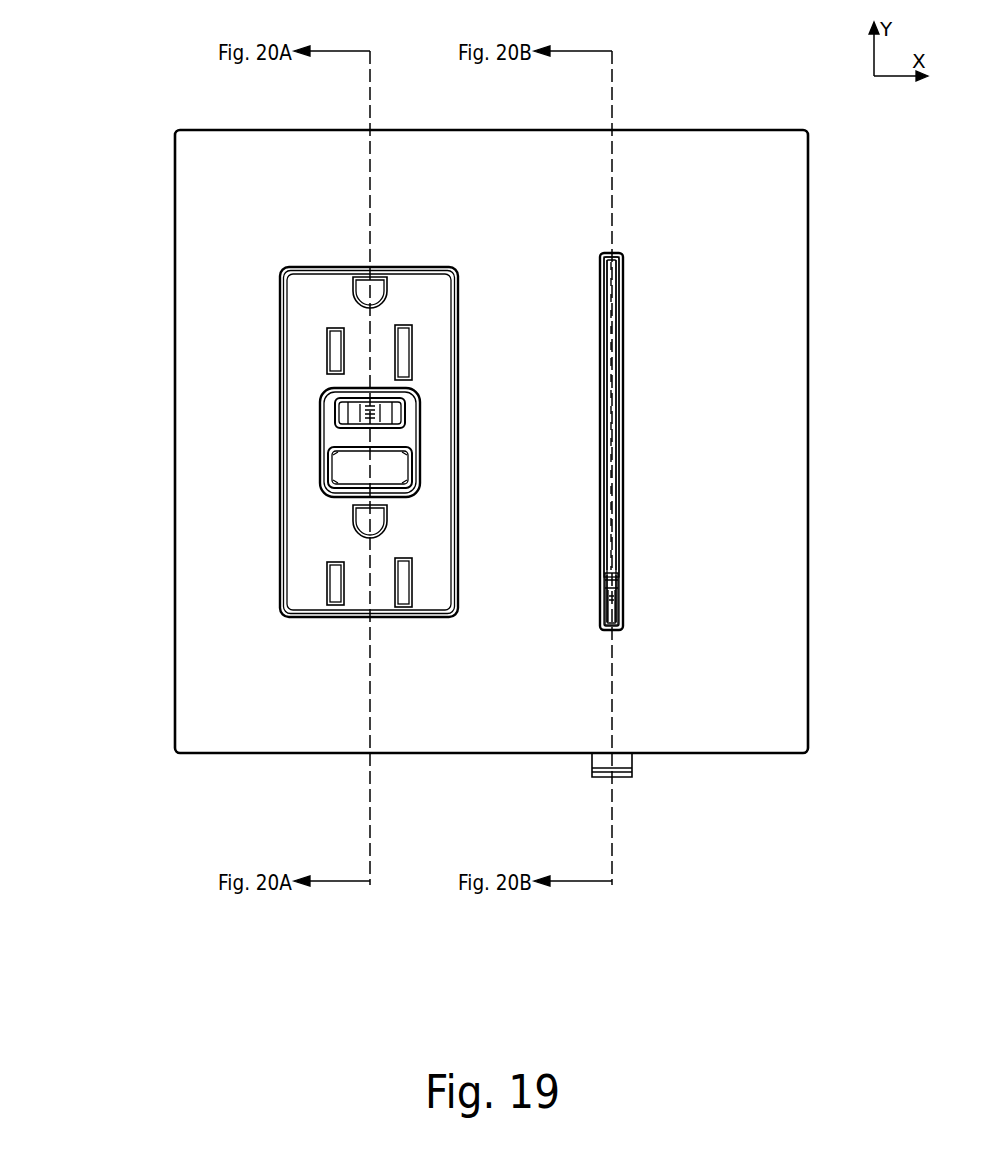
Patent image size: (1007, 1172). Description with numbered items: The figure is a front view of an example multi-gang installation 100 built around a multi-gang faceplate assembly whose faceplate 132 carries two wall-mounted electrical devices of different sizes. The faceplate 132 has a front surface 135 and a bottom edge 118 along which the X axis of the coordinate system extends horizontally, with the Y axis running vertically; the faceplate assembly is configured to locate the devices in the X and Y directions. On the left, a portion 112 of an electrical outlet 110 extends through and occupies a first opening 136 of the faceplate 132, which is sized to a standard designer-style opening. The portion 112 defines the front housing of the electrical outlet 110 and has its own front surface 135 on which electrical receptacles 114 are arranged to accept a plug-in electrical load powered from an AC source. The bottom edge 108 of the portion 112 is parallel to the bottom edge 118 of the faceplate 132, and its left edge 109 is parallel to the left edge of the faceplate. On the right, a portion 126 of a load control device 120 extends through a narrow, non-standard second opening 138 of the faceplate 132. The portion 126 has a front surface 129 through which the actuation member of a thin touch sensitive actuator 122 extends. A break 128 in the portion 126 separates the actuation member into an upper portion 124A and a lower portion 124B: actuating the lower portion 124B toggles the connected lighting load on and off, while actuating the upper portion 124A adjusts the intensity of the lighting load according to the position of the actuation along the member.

The multi-gang installation 100 is at (209, 111).
The bottom edge 108 is at (306, 613).
The left edge 109 is at (287, 585).
The electrical outlet 110 is at (281, 626).
The portion 112 is at (290, 435).
The electrical receptacle 114 is at (327, 460).
The bottom edge 118 is at (713, 753).
The load control device 120 is at (662, 393).
The thin touch sensitive actuator 122 is at (623, 441).
The upper portion 124A is at (623, 467).
The lower portion 124B is at (623, 600).
The portion 126 is at (623, 327).
The break 128 is at (623, 572).
The front surface 129 is at (610, 355).
The faceplate 132 is at (392, 718).
The front surface 135 is at (714, 160).
The first opening 136 is at (290, 266).
The second opening 138 is at (600, 253).